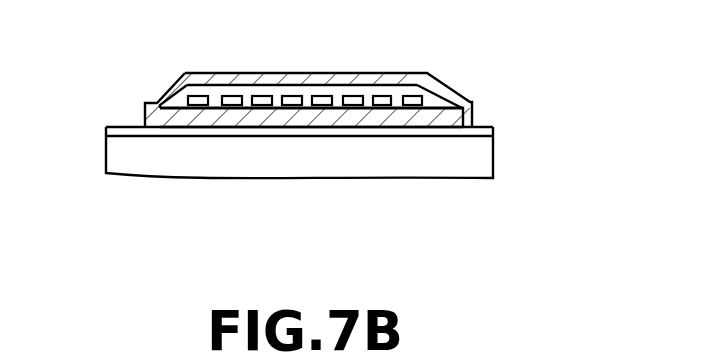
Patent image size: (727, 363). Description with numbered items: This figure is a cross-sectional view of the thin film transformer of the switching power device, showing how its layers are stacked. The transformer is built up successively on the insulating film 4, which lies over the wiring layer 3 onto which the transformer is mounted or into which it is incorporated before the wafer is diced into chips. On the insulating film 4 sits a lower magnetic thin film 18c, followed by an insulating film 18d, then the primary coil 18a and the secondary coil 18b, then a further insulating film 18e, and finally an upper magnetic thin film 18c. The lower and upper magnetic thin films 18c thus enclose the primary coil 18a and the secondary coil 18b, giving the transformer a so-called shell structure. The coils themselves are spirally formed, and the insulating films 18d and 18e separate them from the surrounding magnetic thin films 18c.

The wiring layer 3 is at (483, 157).
The insulating film 4 is at (497, 133).
The primary coil 18a is at (415, 93).
The secondary coil 18b is at (382, 98).
The magnetic thin film 18c is at (183, 73).
The insulating film 18d is at (328, 120).
The insulating film 18e is at (305, 92).